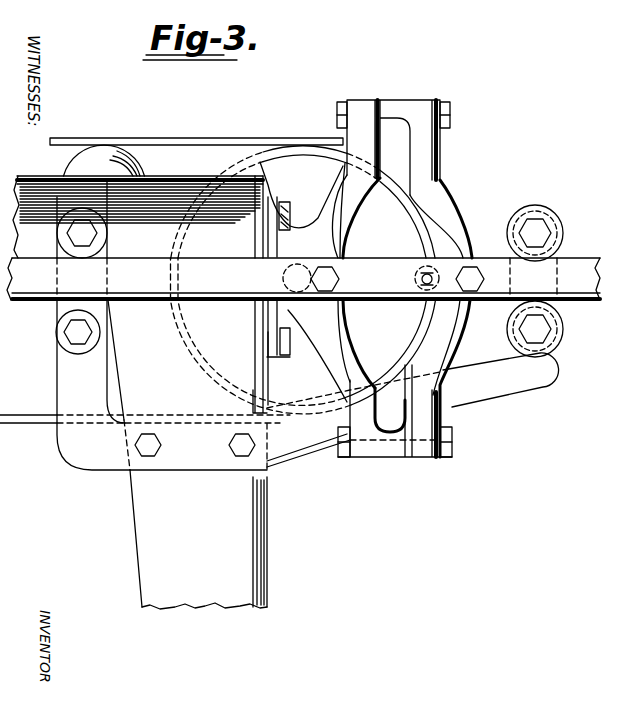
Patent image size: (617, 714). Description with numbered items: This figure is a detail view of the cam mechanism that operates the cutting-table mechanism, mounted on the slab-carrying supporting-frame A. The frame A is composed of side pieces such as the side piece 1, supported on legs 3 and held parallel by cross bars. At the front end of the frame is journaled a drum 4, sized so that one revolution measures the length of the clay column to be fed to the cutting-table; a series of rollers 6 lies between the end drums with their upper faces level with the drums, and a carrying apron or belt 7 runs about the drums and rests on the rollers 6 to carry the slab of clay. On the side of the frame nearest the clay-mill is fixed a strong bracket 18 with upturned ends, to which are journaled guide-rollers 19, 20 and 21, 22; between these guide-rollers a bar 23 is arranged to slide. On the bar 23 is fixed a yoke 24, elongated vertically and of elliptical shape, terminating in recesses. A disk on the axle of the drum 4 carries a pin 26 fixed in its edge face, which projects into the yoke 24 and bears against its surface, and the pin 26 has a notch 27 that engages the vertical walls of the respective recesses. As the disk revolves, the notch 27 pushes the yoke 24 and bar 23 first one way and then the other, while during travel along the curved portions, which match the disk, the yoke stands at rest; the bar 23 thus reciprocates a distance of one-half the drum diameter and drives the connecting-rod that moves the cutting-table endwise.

The side piece 1 is at (25, 414).
The legs 3 is at (187, 454).
The drum 4 is at (330, 158).
The rollers 6 is at (143, 159).
The carrying apron or belt 7 is at (228, 140).
The bracket 18 is at (413, 410).
The guide-roller 19 is at (58, 233).
The guide-roller 20 is at (55, 332).
The guide-roller 21 is at (552, 233).
The guide-roller 22 is at (552, 329).
The bar 23 is at (303, 279).
The yoke 24 is at (440, 203).
The pin 26 is at (417, 281).
The notch 27 is at (422, 277).
The supporting-frame A is at (85, 494).